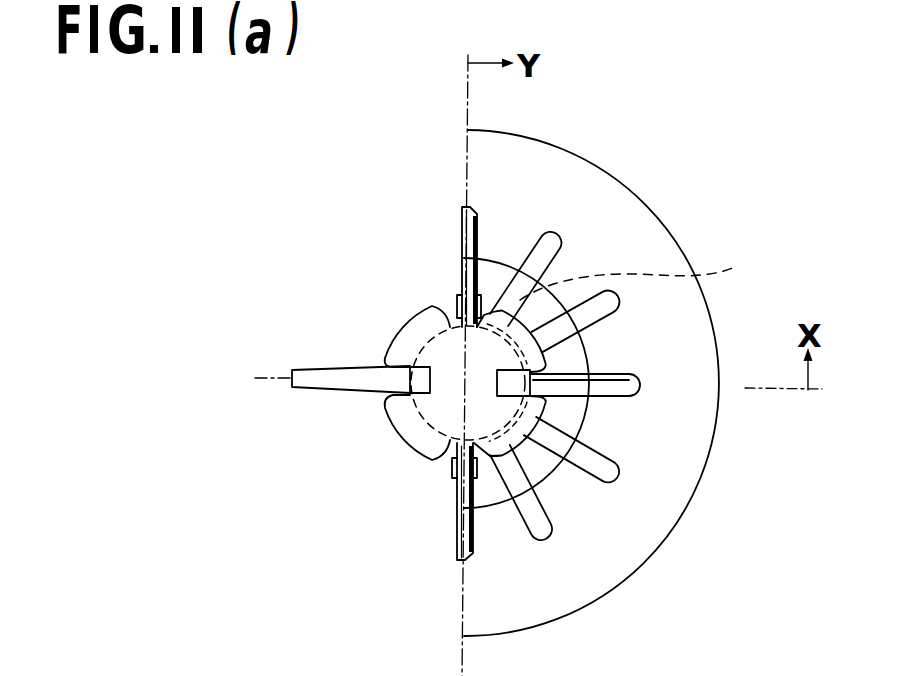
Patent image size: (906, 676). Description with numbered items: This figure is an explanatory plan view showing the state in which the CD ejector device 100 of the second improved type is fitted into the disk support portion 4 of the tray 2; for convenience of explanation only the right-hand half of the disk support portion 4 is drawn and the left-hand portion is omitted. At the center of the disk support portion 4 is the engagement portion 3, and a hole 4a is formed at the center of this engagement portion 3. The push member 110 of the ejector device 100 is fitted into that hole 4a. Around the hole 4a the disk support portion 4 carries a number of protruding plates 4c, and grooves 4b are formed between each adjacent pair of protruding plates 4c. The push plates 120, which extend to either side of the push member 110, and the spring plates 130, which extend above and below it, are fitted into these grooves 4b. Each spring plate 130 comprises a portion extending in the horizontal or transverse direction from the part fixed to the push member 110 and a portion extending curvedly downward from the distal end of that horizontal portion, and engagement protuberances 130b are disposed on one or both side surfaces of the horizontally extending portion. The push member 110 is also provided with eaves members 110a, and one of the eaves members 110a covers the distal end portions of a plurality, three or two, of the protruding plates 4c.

The tray 2 is at (740, 217).
The engagement portion 3 is at (605, 338).
The disk support portion 4 is at (678, 477).
The hole 4a is at (646, 274).
The grooves 4b is at (538, 527).
The protruding plates 4c is at (492, 288).
The ejector device 100 is at (400, 466).
The push member 110 is at (440, 408).
The eaves members 110a is at (560, 447).
The push plates 120 is at (308, 372).
The spring plates 130 is at (460, 210).
The engagement protuberances 130b is at (456, 302).